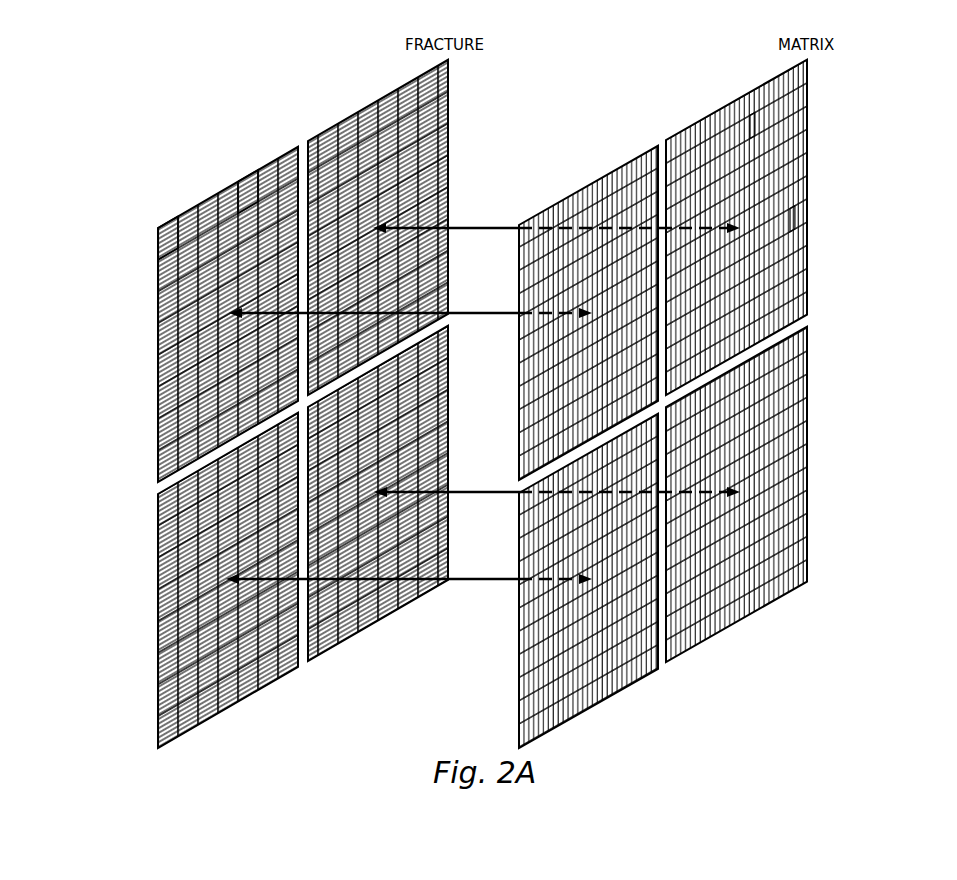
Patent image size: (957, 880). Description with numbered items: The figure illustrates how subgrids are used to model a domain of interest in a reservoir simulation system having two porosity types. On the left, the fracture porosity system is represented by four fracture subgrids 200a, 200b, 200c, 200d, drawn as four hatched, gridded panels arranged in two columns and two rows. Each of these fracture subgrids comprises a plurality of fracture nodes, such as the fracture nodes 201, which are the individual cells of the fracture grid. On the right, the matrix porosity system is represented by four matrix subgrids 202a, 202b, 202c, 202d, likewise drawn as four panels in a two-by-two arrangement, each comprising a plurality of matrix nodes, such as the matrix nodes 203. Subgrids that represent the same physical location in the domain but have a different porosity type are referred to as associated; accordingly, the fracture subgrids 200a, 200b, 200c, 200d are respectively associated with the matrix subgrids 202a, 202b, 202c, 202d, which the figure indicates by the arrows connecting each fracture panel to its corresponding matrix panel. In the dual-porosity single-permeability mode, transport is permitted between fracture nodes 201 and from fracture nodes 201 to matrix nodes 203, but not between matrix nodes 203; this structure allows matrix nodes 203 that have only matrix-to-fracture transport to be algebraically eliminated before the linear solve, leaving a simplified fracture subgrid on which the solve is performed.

The fracture subgrid 200a is at (137, 317).
The fracture subgrid 200b is at (137, 622).
The fracture subgrid 200c is at (361, 83).
The fracture subgrid 200d is at (398, 642).
The fracture node 201 is at (175, 232).
The matrix subgrid 202a is at (573, 163).
The matrix subgrid 202b is at (642, 705).
The matrix subgrid 202c is at (718, 82).
The matrix subgrid 202d is at (829, 453).
The matrix node 203 is at (750, 135).